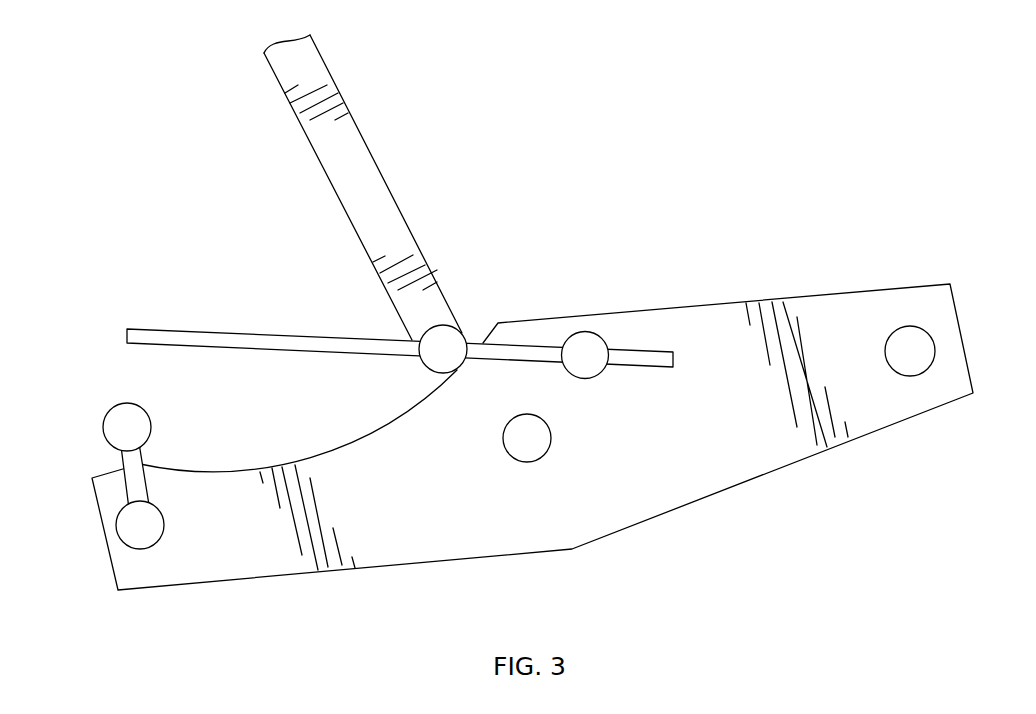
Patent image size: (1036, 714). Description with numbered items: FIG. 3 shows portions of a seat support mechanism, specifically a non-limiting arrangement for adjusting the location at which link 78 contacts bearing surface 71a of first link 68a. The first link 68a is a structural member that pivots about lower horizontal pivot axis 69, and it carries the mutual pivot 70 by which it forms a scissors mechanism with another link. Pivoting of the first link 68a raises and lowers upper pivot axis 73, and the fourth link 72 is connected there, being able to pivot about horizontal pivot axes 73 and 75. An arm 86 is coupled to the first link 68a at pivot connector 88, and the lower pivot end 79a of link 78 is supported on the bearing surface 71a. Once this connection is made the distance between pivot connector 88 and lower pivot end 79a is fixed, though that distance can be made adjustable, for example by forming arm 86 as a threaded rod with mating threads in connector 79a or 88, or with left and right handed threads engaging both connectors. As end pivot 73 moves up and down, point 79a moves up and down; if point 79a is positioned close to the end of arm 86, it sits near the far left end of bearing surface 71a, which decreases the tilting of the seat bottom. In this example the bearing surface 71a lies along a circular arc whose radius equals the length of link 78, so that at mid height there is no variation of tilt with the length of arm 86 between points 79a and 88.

The first link 68a is at (369, 569).
The bearing surface 71a is at (274, 458).
The link 78 is at (366, 174).
The lower pivot end 79a is at (447, 338).
The arm 86 is at (190, 335).
The pivot connector 88 is at (590, 348).
The lower horizontal pivot axis 69 is at (918, 351).
The mutual pivot 70 is at (543, 446).
The horizontal pivot axis 75 is at (117, 420).
The fourth link 72 is at (132, 462).
The upper pivot axis 73 is at (130, 530).